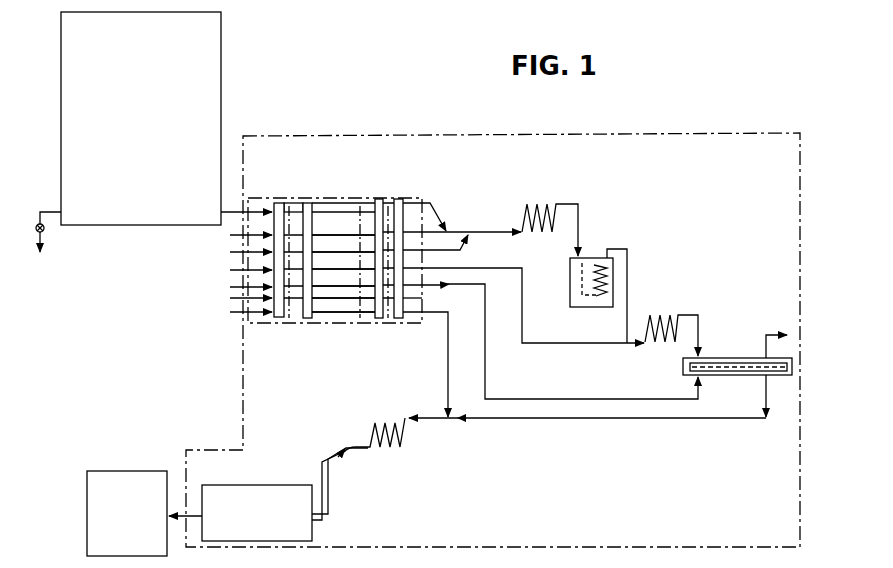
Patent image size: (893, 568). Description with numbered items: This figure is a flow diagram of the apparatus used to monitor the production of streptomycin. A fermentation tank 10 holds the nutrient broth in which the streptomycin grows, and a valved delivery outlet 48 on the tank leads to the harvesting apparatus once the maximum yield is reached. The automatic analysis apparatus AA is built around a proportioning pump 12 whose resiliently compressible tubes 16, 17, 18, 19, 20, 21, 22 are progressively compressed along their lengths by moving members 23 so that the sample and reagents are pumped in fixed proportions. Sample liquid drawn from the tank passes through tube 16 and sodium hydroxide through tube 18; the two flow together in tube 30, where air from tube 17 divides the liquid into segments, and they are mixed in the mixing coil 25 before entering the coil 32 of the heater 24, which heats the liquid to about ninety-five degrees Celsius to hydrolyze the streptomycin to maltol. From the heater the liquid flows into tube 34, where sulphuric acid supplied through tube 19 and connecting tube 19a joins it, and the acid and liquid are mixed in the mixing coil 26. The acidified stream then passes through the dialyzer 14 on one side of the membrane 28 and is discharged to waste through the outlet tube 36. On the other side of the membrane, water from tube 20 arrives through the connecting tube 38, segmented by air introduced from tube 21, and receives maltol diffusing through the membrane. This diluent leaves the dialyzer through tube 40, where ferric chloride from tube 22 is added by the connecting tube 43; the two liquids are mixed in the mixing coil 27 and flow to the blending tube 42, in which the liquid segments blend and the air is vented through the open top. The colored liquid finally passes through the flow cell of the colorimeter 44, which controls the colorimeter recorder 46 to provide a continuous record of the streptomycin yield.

The automatic analysis apparatus AA is at (521, 136).
The fermentation tank 10 is at (220, 63).
The proportioning pump 12 is at (352, 202).
The dialyzer 14 is at (723, 356).
The pump tube 16 is at (296, 203).
The pump tube 17 is at (328, 235).
The pump tube 18 is at (336, 251).
The pump tube 19 is at (349, 270).
The connecting tube 19a is at (580, 343).
The pump tube 20 is at (355, 287).
The pump tube 21 is at (366, 299).
The pump tube 22 is at (333, 314).
The compressing members 23 is at (400, 200).
The heater 24 is at (594, 256).
The mixing coil 25 is at (541, 203).
The mixing coil 26 is at (658, 315).
The mixing coil 27 is at (404, 441).
The dialyzer membrane 28 is at (737, 372).
The tube 30 is at (487, 232).
The heater coil 32 is at (601, 301).
The tube 34 is at (628, 272).
The outlet tube 36 is at (767, 335).
The connecting tube 38 is at (565, 399).
The tube 40 is at (634, 418).
The blending tube 42 is at (332, 497).
The connecting tube 43 is at (448, 360).
The colorimeter 44 is at (253, 484).
The colorimeter recorder 46 is at (132, 471).
The valved delivery outlet 48 is at (45, 232).